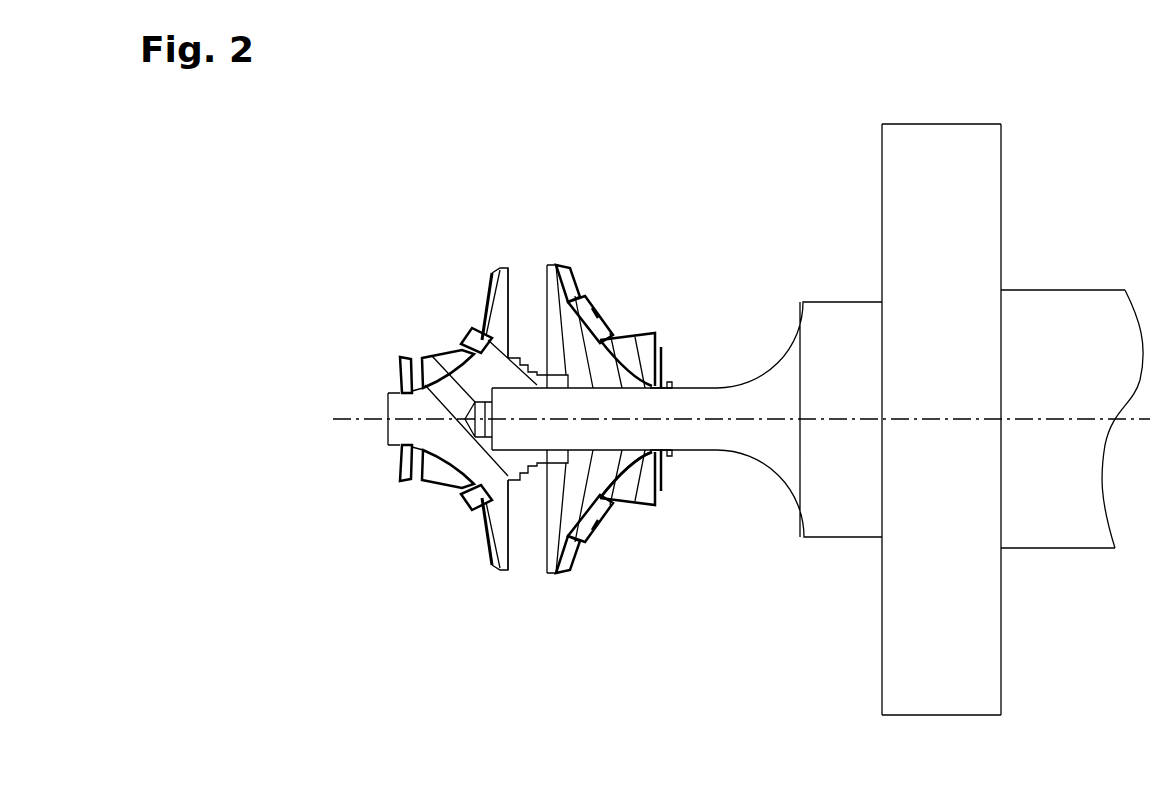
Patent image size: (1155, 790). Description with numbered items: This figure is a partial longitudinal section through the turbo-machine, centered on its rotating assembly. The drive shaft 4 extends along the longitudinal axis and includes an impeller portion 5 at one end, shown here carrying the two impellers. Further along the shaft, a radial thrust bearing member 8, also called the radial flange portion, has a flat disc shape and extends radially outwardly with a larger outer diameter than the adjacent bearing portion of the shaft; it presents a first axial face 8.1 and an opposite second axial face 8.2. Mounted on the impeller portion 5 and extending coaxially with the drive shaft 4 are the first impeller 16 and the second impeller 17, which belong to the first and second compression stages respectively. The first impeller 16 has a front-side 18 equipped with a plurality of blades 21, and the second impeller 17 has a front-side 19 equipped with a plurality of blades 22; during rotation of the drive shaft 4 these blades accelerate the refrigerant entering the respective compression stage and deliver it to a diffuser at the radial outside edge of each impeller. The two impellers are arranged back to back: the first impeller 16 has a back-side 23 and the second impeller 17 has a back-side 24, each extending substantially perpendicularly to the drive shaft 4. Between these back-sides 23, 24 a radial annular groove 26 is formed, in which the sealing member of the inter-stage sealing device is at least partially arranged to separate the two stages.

The drive shaft 4 is at (1080, 330).
The impeller portion 5 is at (648, 407).
The radial thrust bearing member 8 is at (943, 419).
The first axial face 8.1 is at (882, 640).
The second axial face 8.2 is at (1001, 640).
The first impeller 16 is at (560, 495).
The second impeller 17 is at (426, 384).
The front-side 18 is at (607, 433).
The front-side 19 is at (482, 312).
The blades 21 is at (568, 297).
The blades 22 is at (402, 383).
The back-side 23 is at (540, 330).
The back-side 24 is at (511, 290).
The radial annular groove 26 is at (524, 561).